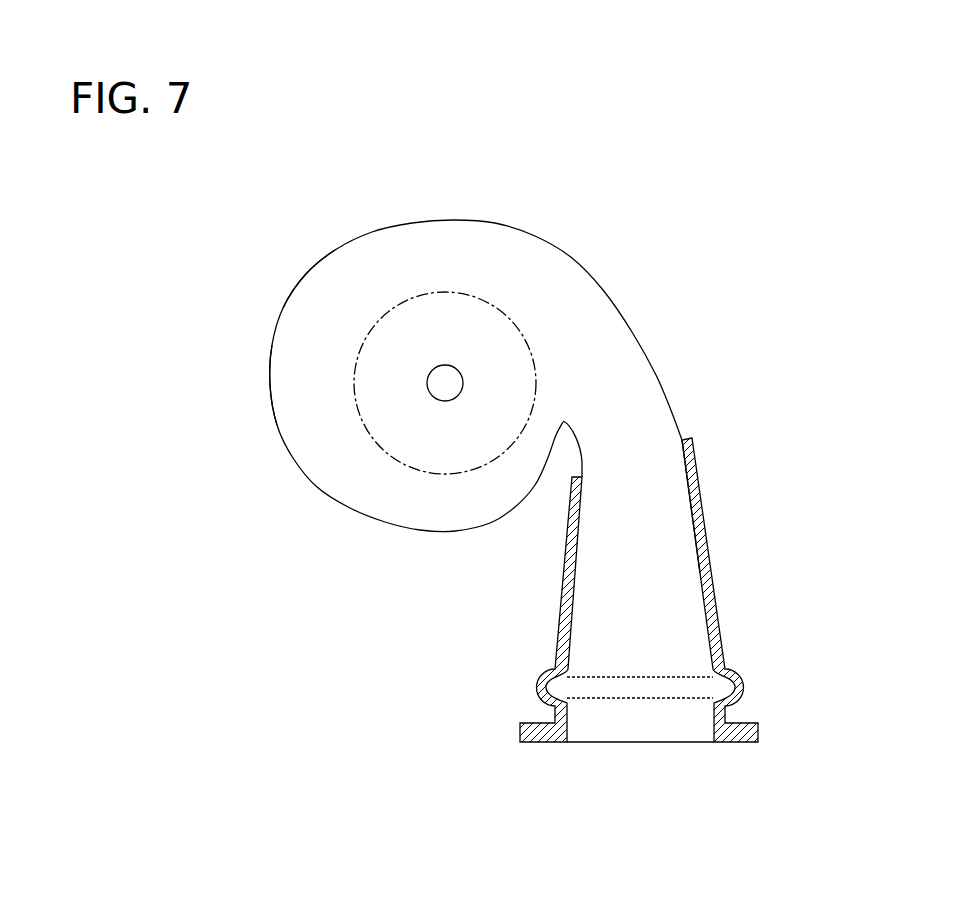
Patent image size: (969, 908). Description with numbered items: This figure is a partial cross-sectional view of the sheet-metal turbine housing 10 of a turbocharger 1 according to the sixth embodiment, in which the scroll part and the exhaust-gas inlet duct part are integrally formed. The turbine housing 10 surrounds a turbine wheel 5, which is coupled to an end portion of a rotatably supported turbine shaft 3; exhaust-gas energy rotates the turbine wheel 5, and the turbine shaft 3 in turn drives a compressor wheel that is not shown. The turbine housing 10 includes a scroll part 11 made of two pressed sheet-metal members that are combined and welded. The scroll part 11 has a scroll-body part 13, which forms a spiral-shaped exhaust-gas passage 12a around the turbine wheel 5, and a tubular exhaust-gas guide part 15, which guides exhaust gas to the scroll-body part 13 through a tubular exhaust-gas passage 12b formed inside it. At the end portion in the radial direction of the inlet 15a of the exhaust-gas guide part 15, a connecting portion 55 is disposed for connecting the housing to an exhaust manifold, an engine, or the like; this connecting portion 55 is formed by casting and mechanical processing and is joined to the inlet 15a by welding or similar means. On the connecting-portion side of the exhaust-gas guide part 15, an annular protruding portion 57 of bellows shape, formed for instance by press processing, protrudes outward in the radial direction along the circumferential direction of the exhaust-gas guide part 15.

The turbocharger 1 is at (662, 153).
The turbine housing 10 is at (557, 222).
The scroll part 11 is at (413, 222).
The exhaust-gas passage 12a is at (333, 305).
The scroll-body part 13 is at (271, 368).
The exhaust-gas passage 12b is at (660, 503).
The exhaust-gas guide part 15 is at (710, 560).
The inlet 15a is at (628, 736).
The connecting portion 55 is at (740, 743).
The annular protruding portion 57 is at (743, 683).
The turbine shaft 3 is at (431, 395).
The turbine wheel 5 is at (458, 473).